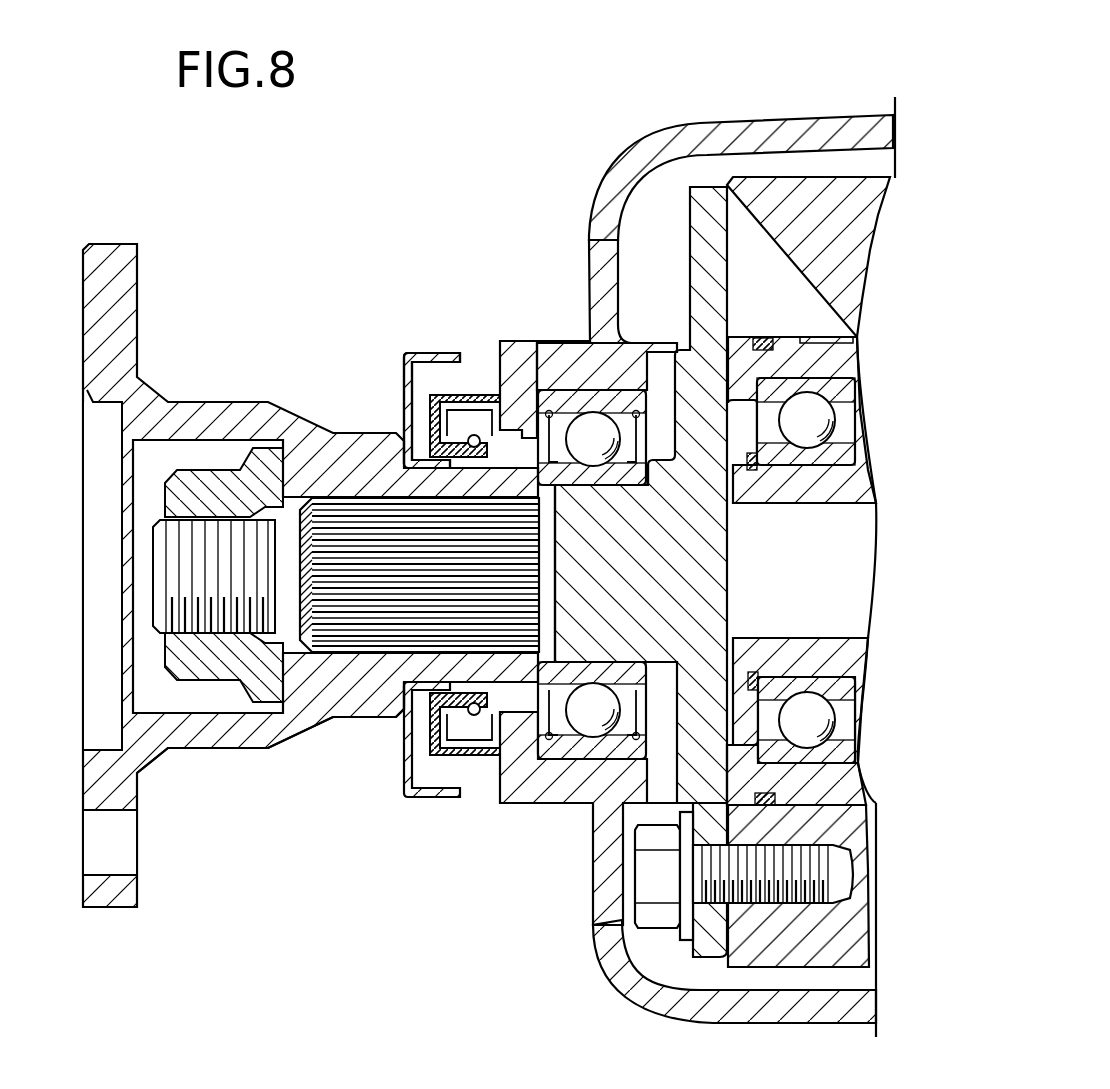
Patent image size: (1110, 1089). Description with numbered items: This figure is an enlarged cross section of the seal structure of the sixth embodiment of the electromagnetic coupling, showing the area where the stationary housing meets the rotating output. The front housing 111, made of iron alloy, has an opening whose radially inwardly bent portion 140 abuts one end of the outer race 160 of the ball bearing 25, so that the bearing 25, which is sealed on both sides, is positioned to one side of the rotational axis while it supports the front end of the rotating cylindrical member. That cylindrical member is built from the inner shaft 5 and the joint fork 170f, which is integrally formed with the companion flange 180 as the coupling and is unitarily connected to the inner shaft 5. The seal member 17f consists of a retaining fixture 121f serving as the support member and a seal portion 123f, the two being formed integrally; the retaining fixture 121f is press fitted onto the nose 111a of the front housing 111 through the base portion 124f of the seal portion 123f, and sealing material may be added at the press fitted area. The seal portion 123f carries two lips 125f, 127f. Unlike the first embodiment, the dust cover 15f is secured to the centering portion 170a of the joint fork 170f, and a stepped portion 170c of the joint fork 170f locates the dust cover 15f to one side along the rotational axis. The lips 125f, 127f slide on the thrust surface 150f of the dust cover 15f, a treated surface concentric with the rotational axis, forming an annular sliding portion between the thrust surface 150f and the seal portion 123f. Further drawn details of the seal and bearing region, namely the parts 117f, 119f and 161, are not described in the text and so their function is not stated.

The front housing 111 is at (706, 115).
The nose 111a is at (445, 378).
The companion flange 180 is at (120, 290).
The seal member 17f is at (386, 326).
The dust cover 15f is at (403, 347).
The seal bracket 117f is at (413, 412).
The seal case 119f is at (462, 396).
The seal portion 123f is at (430, 445).
The base portion 124f is at (490, 425).
The bent portion 140 is at (524, 430).
The ball bearing 25 is at (593, 422).
The outer race 160 is at (618, 392).
The bearing retaining ring 161 is at (620, 415).
The retaining fixture 121f is at (553, 496).
The stepped portion 170c is at (283, 447).
The lip 125f is at (400, 466).
The joint fork 170f is at (335, 703).
The centering portion 170a is at (490, 458).
The inner shaft 5 is at (362, 656).
The thrust surface 150f is at (441, 458).
The lip 127f is at (502, 790).